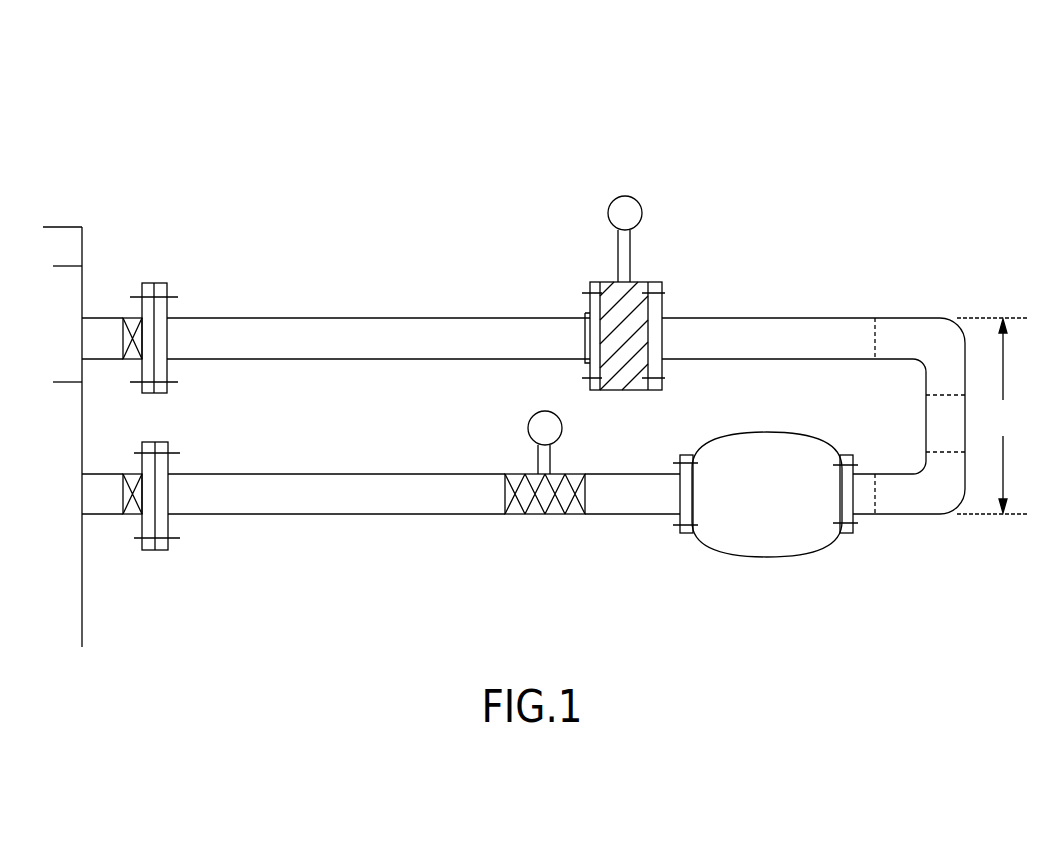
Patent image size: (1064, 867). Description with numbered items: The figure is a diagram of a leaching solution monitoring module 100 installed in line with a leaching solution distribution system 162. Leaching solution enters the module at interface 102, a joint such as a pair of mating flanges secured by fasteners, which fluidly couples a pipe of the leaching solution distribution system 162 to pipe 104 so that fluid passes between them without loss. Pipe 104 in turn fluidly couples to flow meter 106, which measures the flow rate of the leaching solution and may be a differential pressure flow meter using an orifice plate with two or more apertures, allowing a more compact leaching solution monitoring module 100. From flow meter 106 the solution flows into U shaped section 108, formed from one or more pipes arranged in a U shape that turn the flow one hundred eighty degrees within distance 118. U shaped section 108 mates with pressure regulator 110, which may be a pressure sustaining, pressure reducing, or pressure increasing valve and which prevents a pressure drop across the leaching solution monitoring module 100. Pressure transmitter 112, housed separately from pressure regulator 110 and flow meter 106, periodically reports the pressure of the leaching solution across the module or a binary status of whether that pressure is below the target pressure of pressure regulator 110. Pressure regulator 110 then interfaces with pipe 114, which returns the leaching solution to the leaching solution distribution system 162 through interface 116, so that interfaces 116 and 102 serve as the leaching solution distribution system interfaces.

The leaching solution monitoring module 100 is at (205, 147).
The interface 102 is at (140, 267).
The pipe 104 is at (513, 315).
The flow meter 106 is at (638, 197).
The U shaped section 108 is at (945, 320).
The pressure regulator 110 is at (820, 552).
The pressure transmitter 112 is at (535, 514).
The pipe 114 is at (420, 547).
The interface 116 is at (173, 433).
The distance 118 is at (992, 416).
The leaching solution distribution system 162 is at (82, 438).